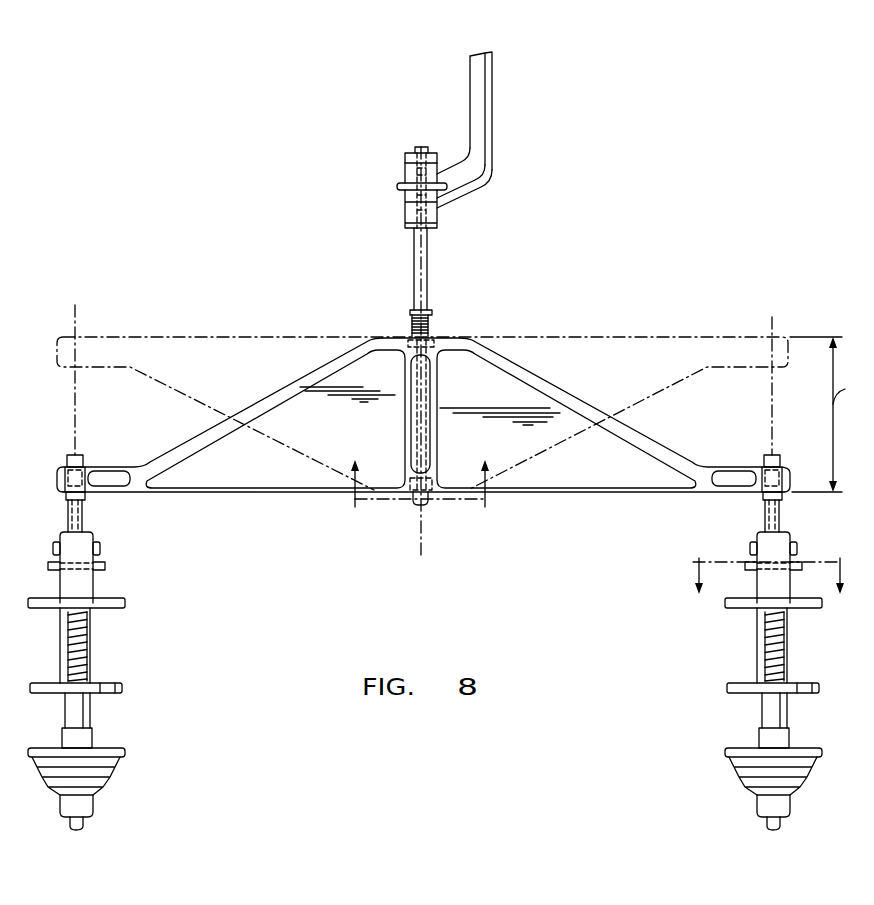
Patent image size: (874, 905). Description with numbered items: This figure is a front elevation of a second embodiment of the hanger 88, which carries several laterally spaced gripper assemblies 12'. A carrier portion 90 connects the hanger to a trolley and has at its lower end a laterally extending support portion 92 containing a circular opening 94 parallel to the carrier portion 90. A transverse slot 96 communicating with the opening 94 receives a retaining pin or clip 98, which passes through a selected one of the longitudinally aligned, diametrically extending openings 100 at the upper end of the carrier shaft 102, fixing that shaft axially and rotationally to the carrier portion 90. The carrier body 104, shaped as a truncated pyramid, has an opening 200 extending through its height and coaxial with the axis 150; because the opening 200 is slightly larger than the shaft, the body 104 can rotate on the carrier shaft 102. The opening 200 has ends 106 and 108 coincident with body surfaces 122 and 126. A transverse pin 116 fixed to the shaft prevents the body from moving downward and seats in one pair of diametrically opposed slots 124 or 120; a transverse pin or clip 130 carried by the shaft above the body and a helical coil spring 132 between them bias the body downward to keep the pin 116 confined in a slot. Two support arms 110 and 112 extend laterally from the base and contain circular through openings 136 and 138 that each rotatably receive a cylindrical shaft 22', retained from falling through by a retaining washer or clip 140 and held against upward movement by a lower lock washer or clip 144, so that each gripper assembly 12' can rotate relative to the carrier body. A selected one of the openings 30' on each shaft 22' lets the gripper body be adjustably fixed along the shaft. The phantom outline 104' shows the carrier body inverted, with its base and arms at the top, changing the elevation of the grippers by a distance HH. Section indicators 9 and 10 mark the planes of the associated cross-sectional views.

The gripper assembly 12' is at (422, 661).
The shaft 22' is at (423, 520).
The openings 30' is at (437, 557).
The hanger 88 is at (563, 112).
The carrier portion 90 is at (492, 73).
The support portion 92 is at (405, 160).
The circular opening 94 is at (412, 213).
The transverse slot 96 is at (441, 191).
The retaining pin or clip 98 is at (397, 185).
The diametrically extending openings 100 is at (429, 168).
The carrier shaft 102 is at (419, 147).
The carrier body 104 is at (423, 419).
The inverted carrier body 104' is at (422, 394).
The opening end 106 is at (433, 327).
The opening end 108 is at (420, 505).
The support arm 110 is at (151, 472).
The support arm 112 is at (698, 463).
The transversely extending pin 116 is at (429, 505).
The slots 120 is at (411, 346).
The carrier body surface 122 is at (458, 337).
The slots 124 is at (408, 486).
The carrier body surface 126 is at (573, 492).
The transverse pin or clip 130 is at (412, 311).
The helical coil spring 132 is at (431, 311).
The through opening 136 is at (67, 472).
The through opening 138 is at (779, 470).
The retaining washer or clip 140 is at (83, 461).
The lower lock washer or clip 144 is at (67, 497).
The axis 150 is at (422, 543).
The opening 200 is at (431, 367).
The section line 9- 9 is at (423, 499).
The section line 10- 10 is at (769, 565).